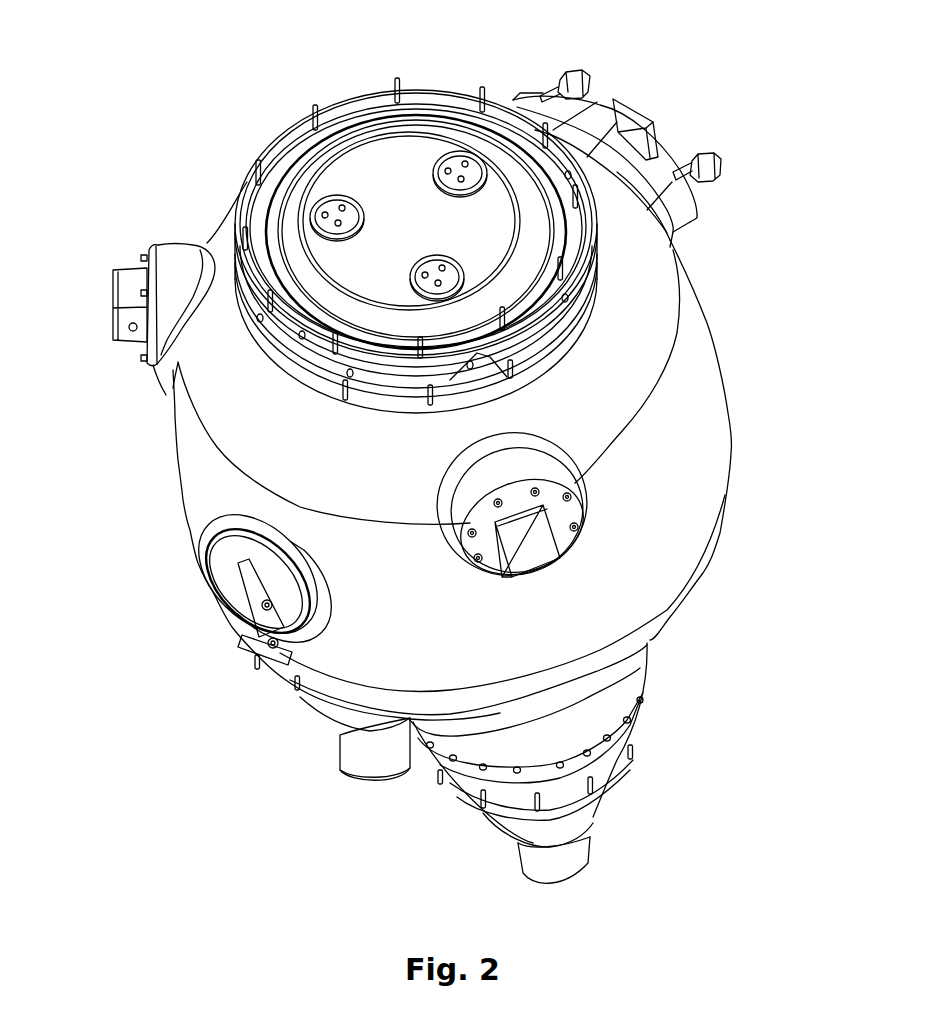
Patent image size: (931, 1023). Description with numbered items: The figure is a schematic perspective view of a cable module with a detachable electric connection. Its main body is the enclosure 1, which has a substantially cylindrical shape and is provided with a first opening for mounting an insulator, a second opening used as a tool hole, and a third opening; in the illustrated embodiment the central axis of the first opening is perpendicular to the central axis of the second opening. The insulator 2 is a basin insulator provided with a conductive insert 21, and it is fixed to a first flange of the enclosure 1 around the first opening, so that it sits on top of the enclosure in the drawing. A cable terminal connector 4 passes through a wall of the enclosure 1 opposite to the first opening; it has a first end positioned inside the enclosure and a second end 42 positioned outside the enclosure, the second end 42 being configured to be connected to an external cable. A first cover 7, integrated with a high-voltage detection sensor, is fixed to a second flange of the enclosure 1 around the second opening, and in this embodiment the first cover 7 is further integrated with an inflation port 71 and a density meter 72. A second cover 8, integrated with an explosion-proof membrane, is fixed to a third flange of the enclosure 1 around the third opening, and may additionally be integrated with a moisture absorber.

The enclosure 1 is at (210, 473).
The insulator 2 is at (387, 170).
The conductive insert 21 is at (330, 205).
The cable terminal connector 4 is at (590, 812).
The second end 42 is at (565, 873).
The first cover 7 is at (637, 118).
The inflation port 71 is at (566, 78).
The density meter 72 is at (710, 162).
The second cover 8 is at (232, 582).